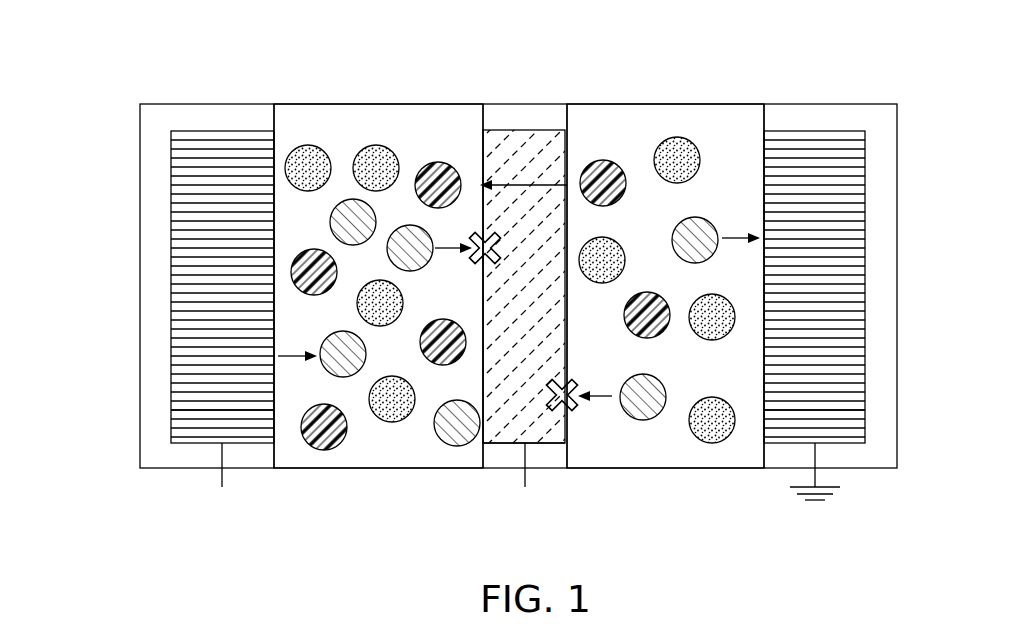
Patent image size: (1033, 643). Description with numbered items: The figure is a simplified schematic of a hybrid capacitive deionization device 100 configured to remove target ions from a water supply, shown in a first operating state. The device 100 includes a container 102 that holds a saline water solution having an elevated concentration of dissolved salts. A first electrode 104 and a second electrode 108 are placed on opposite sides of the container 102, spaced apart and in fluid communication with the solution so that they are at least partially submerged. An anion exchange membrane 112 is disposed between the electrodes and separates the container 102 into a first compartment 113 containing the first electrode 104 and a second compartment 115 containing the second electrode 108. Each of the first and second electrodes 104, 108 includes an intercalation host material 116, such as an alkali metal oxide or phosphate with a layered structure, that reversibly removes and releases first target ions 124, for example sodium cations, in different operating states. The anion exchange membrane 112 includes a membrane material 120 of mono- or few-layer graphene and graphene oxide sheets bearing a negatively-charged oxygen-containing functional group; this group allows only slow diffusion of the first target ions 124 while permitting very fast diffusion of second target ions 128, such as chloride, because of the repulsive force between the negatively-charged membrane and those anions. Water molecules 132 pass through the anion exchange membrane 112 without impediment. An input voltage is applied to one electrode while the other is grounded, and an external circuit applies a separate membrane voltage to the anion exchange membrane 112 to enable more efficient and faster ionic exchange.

The device 100 is at (118, 103).
The container 102 is at (172, 470).
The first electrode 104 is at (162, 268).
The second electrode 108 is at (876, 226).
The anion exchange membrane (AEM) 112 is at (509, 458).
The first compartment 113 is at (290, 450).
The second compartment 115 is at (634, 455).
The intercalation host material 116 is at (200, 418).
The membrane material 120 is at (483, 145).
The first target ions 124 is at (703, 218).
The second target ions 128 is at (432, 162).
The H2O molecules 132 is at (308, 145).